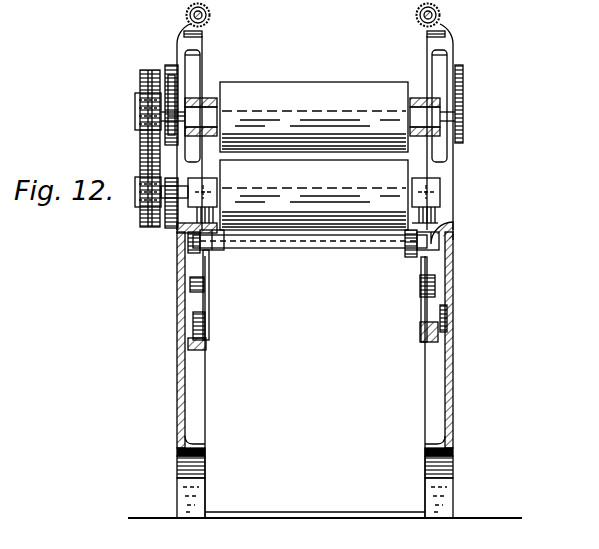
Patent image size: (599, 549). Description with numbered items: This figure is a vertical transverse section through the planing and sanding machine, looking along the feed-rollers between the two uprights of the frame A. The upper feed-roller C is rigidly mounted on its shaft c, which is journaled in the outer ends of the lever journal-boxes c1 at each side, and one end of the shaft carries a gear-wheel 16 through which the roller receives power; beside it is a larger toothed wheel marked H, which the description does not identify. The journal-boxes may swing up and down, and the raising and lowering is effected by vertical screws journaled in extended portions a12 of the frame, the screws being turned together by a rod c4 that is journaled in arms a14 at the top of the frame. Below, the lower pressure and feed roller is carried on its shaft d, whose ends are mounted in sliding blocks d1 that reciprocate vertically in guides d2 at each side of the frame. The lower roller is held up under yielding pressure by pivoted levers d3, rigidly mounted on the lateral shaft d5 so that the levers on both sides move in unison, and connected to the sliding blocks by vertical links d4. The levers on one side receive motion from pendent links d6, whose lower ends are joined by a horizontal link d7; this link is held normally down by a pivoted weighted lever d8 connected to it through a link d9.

The frame A is at (177, 400).
The upper feed-roller C is at (314, 156).
The shaft c is at (150, 122).
The lever journal-box c1 is at (214, 98).
The rod c4 is at (477, 19).
The extended portion of the frame a12 is at (484, 69).
The arm of the frame a14 is at (202, 34).
The gear wheel H is at (140, 85).
The gear-wheel 16 is at (129, 111).
The shaft d is at (140, 198).
The sliding block d1 is at (204, 195).
The guide d2 is at (482, 146).
The pivoted lever d3 is at (222, 250).
The vertical link d4 is at (470, 214).
The lateral shaft d5 is at (244, 248).
The pendent link d6 is at (209, 276).
The horizontal link d7 is at (462, 270).
The pivoted weighted lever d8 is at (206, 339).
The link d9 is at (472, 300).